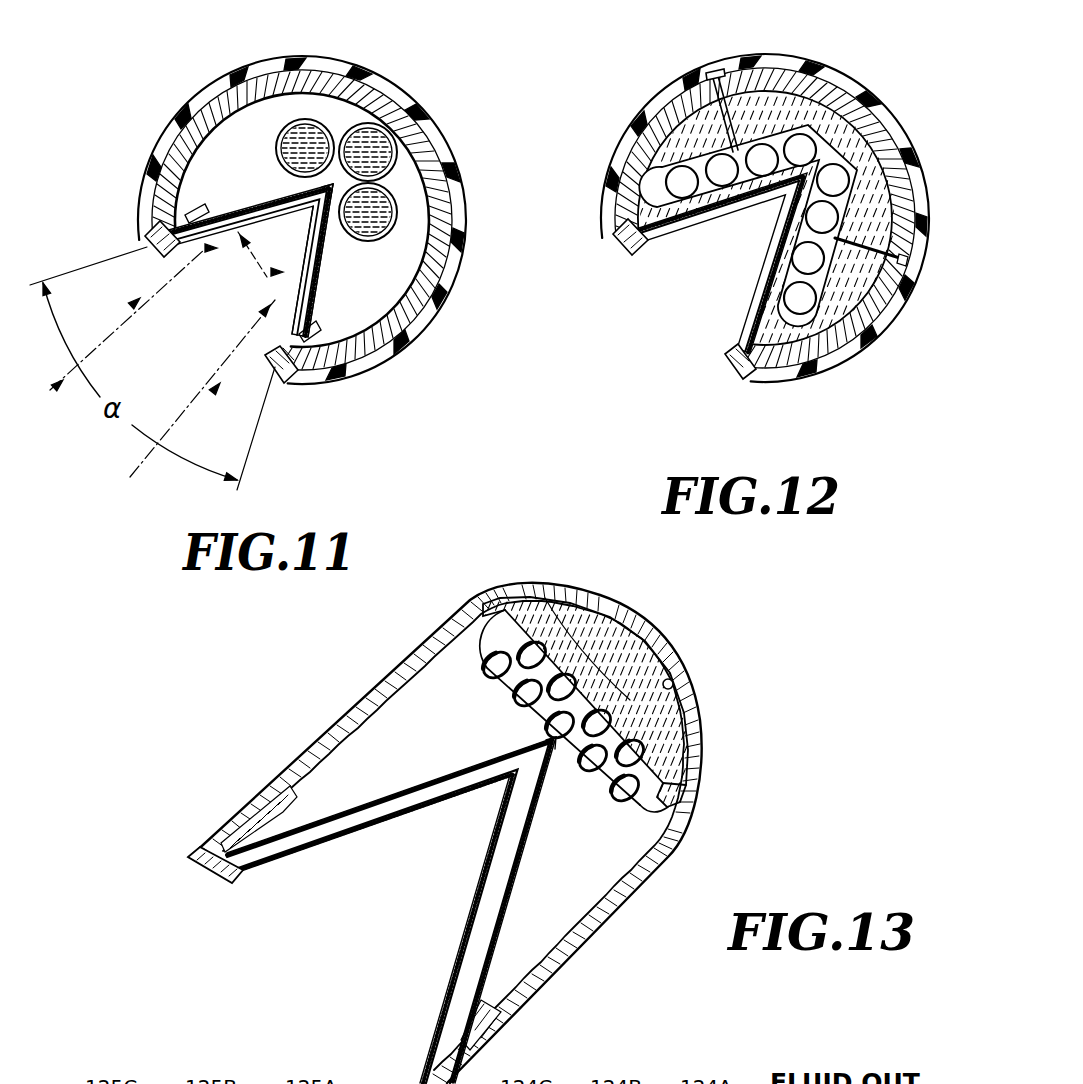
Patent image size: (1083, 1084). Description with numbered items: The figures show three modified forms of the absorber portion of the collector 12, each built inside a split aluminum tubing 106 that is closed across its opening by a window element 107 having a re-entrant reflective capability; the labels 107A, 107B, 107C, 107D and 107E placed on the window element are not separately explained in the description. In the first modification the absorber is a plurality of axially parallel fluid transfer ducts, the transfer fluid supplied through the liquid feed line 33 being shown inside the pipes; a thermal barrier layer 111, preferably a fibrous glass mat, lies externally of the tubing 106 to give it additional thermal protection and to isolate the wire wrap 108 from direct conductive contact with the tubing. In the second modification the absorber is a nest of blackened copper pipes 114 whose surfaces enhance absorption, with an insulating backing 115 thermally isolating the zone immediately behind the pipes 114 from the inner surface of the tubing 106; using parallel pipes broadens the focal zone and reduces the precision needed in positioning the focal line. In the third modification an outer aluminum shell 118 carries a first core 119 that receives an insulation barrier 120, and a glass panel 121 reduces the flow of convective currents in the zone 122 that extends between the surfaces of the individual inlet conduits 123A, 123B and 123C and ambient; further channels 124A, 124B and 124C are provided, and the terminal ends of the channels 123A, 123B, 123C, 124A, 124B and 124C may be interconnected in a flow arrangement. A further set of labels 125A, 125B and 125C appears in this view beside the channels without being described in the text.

In FIG. 11, the collector 12 is at (200, 68).
In FIG. 12, the collector 12 is at (672, 72).
In FIG. 13, the collector 12 is at (305, 708).
In FIG. 11, the liquid feed line 33 is at (318, 124).
In FIG. 11, the split aluminum tubing 106 is at (300, 83).
In FIG. 12, the split aluminum tubing 106 is at (655, 128).
In FIG. 11, the window element 107 is at (262, 187).
In FIG. 12, the window element 107 is at (699, 240).
In FIG. 11, the baffle inner plate 107A is at (300, 300).
In FIG. 13, the baffle inner plate 107A is at (377, 820).
In FIG. 11, the baffle intermediate plate 107B is at (317, 272).
In FIG. 13, the baffle intermediate plate 107B is at (407, 780).
In FIG. 11, the baffle outer plate 107C is at (318, 243).
In FIG. 13, the baffle outer plate 107C is at (487, 773).
In FIG. 11, the baffle apex 107D is at (400, 175).
In FIG. 13, the baffle apex 107D is at (550, 738).
In FIG. 11, the baffle nozzle end 107E is at (303, 377).
In FIG. 12, the baffle nozzle end 107E is at (735, 362).
In FIG. 13, the baffle nozzle end 107E is at (223, 883).
In FIG. 11, the wire wrap 108 is at (438, 146).
In FIG. 11, the thermal barrier layer 111 is at (385, 124).
In FIG. 12, the copper pipes 114 is at (834, 172).
In FIG. 12, the insulating backing 115 is at (835, 80).
In FIG. 13, the outer aluminum shell 118 is at (613, 620).
In FIG. 13, the first core 119 is at (672, 682).
In FIG. 13, the insulation barrier 120 is at (670, 750).
In FIG. 13, the glass panel 121 is at (392, 827).
In FIG. 13, the zone 122 is at (530, 945).
In FIG. 13, the inlet conduit 123A is at (591, 760).
In FIG. 13, the inlet conduit 123B is at (633, 765).
In FIG. 13, the inlet conduit 123C is at (630, 796).
In FIG. 13, the channel 124A is at (496, 666).
In FIG. 13, the channel 124B is at (530, 680).
In FIG. 13, the channel 124C is at (562, 712).
In FIG. 13, the tube opening 125A is at (653, 677).
In FIG. 13, the tube opening 125B is at (637, 640).
In FIG. 13, the tube opening 125C is at (610, 612).